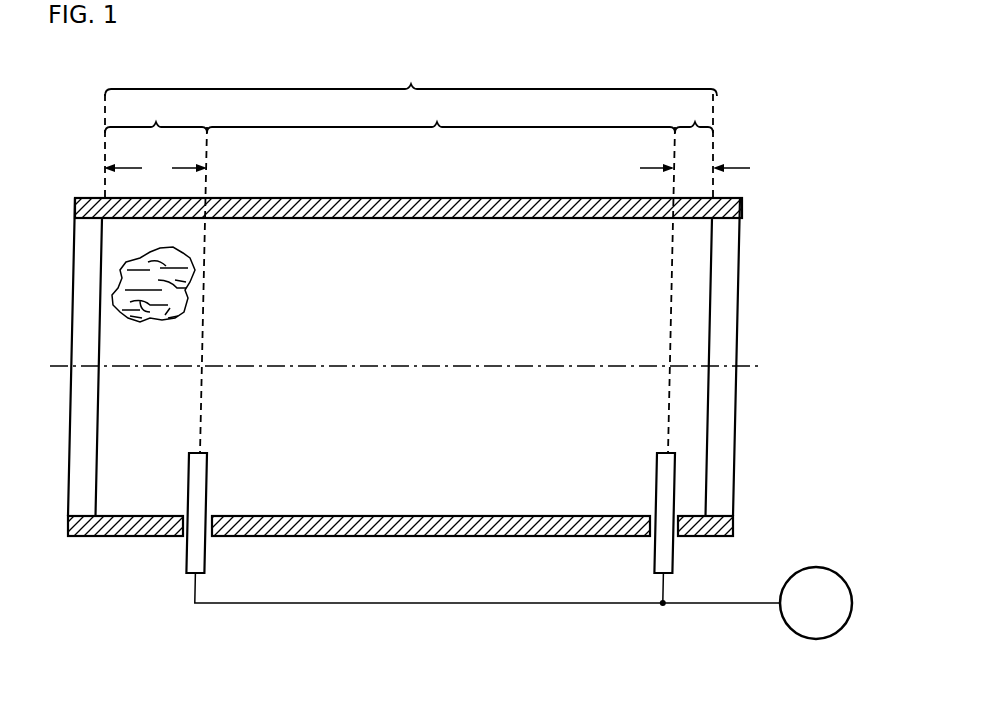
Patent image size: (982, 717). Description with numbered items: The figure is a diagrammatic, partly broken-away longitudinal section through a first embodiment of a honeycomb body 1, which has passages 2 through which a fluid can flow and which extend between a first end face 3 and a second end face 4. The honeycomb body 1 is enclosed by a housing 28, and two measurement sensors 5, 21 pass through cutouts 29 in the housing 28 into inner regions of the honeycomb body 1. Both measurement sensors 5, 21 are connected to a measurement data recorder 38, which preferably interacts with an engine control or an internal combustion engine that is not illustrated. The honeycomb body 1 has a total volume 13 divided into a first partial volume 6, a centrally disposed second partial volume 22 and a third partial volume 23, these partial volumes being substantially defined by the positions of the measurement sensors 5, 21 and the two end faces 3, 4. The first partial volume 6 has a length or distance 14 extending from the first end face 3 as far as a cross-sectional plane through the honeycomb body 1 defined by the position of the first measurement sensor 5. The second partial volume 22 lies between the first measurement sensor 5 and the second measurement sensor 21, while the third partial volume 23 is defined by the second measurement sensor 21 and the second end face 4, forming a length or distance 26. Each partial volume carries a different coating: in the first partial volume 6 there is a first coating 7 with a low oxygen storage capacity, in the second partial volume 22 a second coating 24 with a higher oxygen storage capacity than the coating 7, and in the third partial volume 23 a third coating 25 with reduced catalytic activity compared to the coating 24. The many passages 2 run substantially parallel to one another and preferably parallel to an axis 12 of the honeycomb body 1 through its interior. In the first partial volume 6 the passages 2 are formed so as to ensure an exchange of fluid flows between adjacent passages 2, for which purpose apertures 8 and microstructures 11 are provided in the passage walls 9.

The honeycomb body 1 is at (792, 158).
The passages 2 is at (132, 285).
The first end face 3 is at (95, 252).
The second end face 4 is at (718, 271).
The first measurement sensor 5 is at (203, 553).
The first partial volume 6 is at (156, 274).
The first coating 7 is at (133, 424).
The apertures 8 is at (142, 316).
The passage walls 9 is at (168, 318).
The microstructures 11 is at (188, 282).
The axis 12 is at (722, 366).
The total volume 13 is at (411, 126).
The length or distance 14 is at (155, 168).
The second measurement sensor 21 is at (665, 553).
The second partial volume 22 is at (441, 276).
The third partial volume 23 is at (694, 114).
The second coating 24 is at (417, 424).
The third coating 25 is at (675, 433).
The length or distance 26 is at (695, 168).
The housing 28 is at (745, 208).
The cutouts 29 is at (183, 540).
The measurement data recorder 38 is at (817, 569).